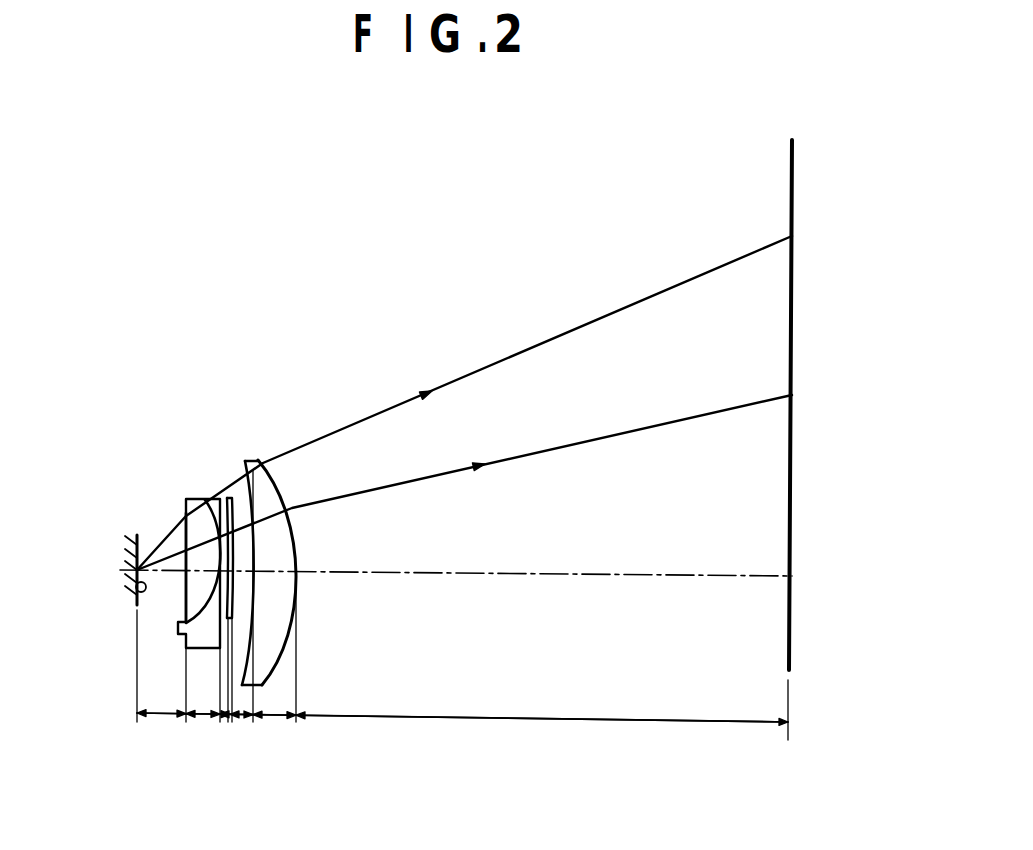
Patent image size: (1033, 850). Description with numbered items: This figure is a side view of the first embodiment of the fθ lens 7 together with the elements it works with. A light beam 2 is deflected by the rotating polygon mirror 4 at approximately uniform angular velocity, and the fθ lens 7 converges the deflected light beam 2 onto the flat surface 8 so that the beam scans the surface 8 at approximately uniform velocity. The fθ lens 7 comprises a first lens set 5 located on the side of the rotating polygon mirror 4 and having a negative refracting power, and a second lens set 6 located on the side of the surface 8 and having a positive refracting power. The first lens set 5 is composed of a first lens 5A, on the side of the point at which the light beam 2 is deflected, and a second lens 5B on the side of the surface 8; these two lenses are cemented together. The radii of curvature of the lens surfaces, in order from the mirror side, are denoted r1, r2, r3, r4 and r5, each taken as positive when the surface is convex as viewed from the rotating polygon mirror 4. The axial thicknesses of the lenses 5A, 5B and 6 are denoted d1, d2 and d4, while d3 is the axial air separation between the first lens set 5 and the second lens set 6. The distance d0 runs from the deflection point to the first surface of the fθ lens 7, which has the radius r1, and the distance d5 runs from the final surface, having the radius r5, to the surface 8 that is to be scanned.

The light beam 2 is at (477, 375).
The rotating polygon mirror 4 is at (135, 593).
The first lens set 5 is at (250, 381).
The first lens 5A is at (157, 549).
The second lens 5B is at (212, 549).
The second lens set 6 is at (286, 555).
The fθ lens 7 is at (273, 348).
The flat surface 8 is at (788, 608).
The radius of curvature of first surface r1 is at (184, 540).
The radius of curvature of second surface r2 is at (183, 588).
The radius of curvature of third surface r3 is at (213, 581).
The radius of curvature of fourth surface r4 is at (247, 482).
The radius of curvature of fifth surface r5 is at (291, 500).
The distance between deflection point and first surface d0 is at (161, 729).
The axial thickness of first lens d1 is at (200, 716).
The axial thickness of second lens d2 is at (225, 729).
The axial air separation d3 is at (240, 716).
The axial thickness of second lens set d4 is at (274, 729).
The distance between final surface and scanned surface d5 is at (542, 730).